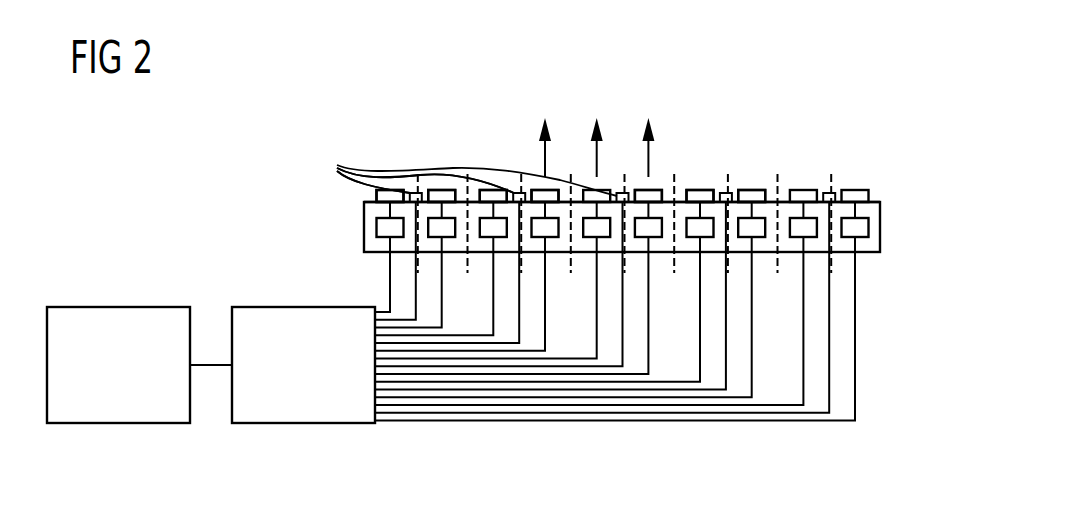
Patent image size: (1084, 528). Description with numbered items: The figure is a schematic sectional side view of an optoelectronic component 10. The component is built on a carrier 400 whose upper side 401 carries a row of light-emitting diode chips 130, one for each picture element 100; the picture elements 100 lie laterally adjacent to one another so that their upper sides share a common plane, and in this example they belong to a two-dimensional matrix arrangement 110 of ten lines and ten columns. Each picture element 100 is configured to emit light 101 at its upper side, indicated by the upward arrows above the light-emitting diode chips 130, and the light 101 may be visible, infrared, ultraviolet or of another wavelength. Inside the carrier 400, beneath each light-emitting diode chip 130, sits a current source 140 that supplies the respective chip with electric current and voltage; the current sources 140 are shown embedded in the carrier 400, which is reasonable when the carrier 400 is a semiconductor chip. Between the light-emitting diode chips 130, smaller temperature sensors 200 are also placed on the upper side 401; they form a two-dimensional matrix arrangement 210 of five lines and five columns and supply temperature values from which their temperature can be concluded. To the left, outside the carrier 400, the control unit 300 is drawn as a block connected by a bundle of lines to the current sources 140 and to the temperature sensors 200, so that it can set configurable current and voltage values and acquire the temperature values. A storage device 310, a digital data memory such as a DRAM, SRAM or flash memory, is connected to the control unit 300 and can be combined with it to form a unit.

The optoelectronic component 10 is at (866, 92).
The picture element 100 is at (492, 148).
The two-dimensional matrix arrangement 110 is at (521, 152).
The light 101 is at (545, 155).
The light-emitting diode chip 130 is at (749, 188).
The current source 140 is at (850, 223).
The temperature sensor 200 is at (431, 172).
The two-dimensional matrix arrangement 210 is at (425, 180).
The control unit 300 is at (305, 307).
The storage device 310 is at (120, 307).
The carrier 400 is at (880, 227).
The upper side 401 is at (877, 203).